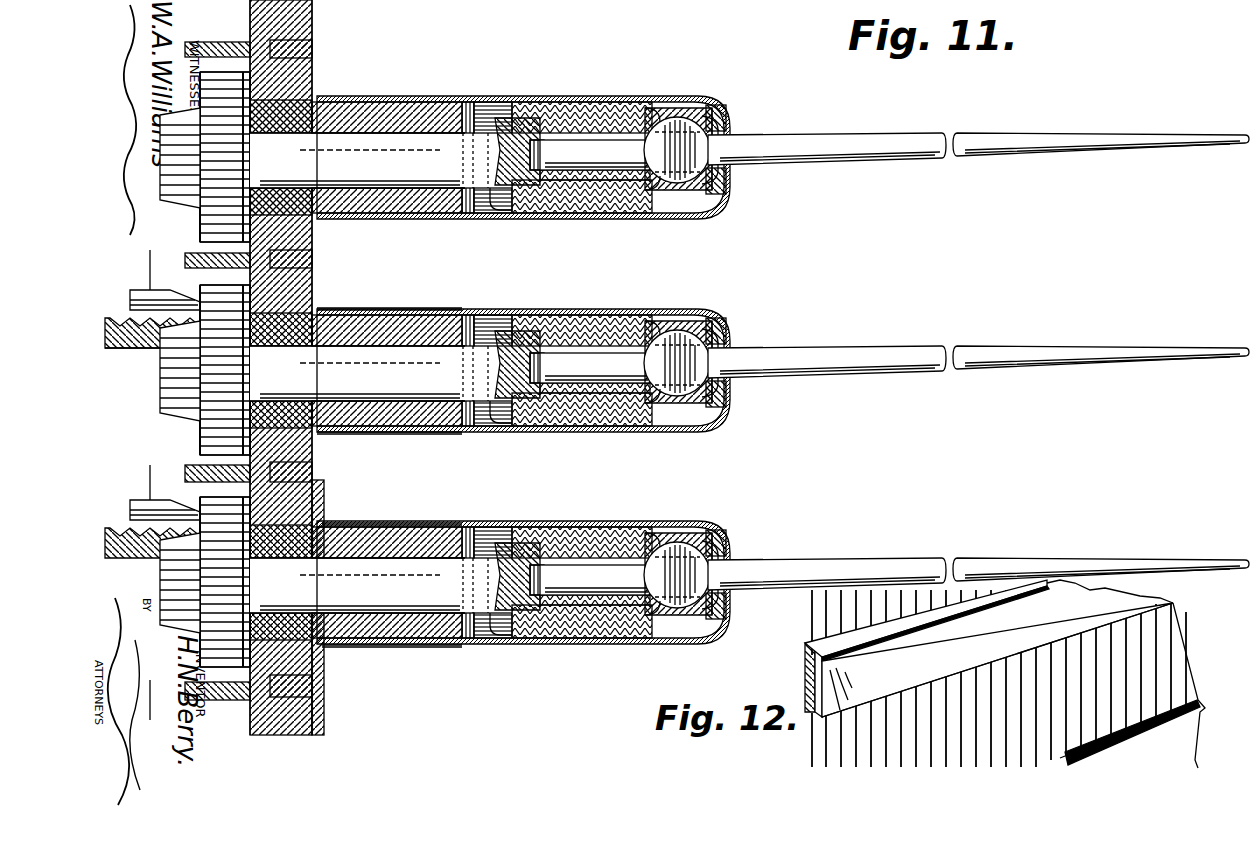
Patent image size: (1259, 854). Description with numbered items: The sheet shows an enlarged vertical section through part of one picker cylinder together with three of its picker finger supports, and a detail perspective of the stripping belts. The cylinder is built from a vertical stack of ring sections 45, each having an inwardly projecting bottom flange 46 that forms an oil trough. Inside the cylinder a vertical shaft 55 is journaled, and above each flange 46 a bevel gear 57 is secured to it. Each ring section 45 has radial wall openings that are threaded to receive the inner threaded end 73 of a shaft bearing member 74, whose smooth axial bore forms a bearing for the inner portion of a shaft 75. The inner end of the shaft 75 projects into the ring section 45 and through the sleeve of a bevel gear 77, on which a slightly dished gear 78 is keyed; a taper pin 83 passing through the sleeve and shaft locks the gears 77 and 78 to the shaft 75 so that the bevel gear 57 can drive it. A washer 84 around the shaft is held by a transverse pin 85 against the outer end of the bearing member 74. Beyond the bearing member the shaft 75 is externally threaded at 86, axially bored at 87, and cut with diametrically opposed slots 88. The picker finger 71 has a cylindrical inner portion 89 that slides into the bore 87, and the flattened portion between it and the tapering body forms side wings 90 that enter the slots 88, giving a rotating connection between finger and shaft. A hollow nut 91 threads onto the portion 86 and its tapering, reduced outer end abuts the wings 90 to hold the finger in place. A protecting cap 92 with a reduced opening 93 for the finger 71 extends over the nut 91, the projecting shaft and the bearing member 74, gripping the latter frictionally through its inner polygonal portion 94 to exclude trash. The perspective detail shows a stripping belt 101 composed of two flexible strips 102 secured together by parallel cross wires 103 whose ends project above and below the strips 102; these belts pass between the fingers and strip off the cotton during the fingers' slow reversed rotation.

In FIG. 11, the ring section 45 is at (312, 262).
In FIG. 11, the bottom flange 46 is at (200, 381).
In FIG. 11, the vertical shaft 55 is at (140, 360).
In FIG. 11, the bevel gear 57 is at (128, 348).
In FIG. 11, the picker finger 71 is at (860, 140).
In FIG. 11, the inner threaded end 73 is at (322, 205).
In FIG. 11, the shaft bearing member 74 is at (408, 420).
In FIG. 11, the shaft 75 is at (405, 200).
In FIG. 11, the bevel gear 77 is at (180, 195).
In FIG. 11, the dished gear 78 is at (305, 75).
In FIG. 11, the taper pin 83 is at (250, 150).
In FIG. 11, the washer 84 is at (470, 112).
In FIG. 11, the transverse pin 85 is at (492, 215).
In FIG. 11, the externally threaded portion 86 is at (575, 540).
In FIG. 11, the axial bore 87 is at (548, 115).
In FIG. 11, the diametrically opposed slots 88 is at (650, 118).
In FIG. 11, the cylindrical inner portion 89 is at (600, 165).
In FIG. 11, the side wings 90 is at (722, 98).
In FIG. 11, the hollow nut 91 is at (655, 190).
In FIG. 11, the protecting cap 92 is at (630, 312).
In FIG. 11, the reduced opening 93 is at (735, 352).
In FIG. 11, the inner polygonal portion 94 is at (400, 312).
In FIG. 12, the stripping belt 101 is at (1094, 674).
In FIG. 12, the strip 102 is at (840, 654).
In FIG. 12, the cross wires 103 is at (830, 617).